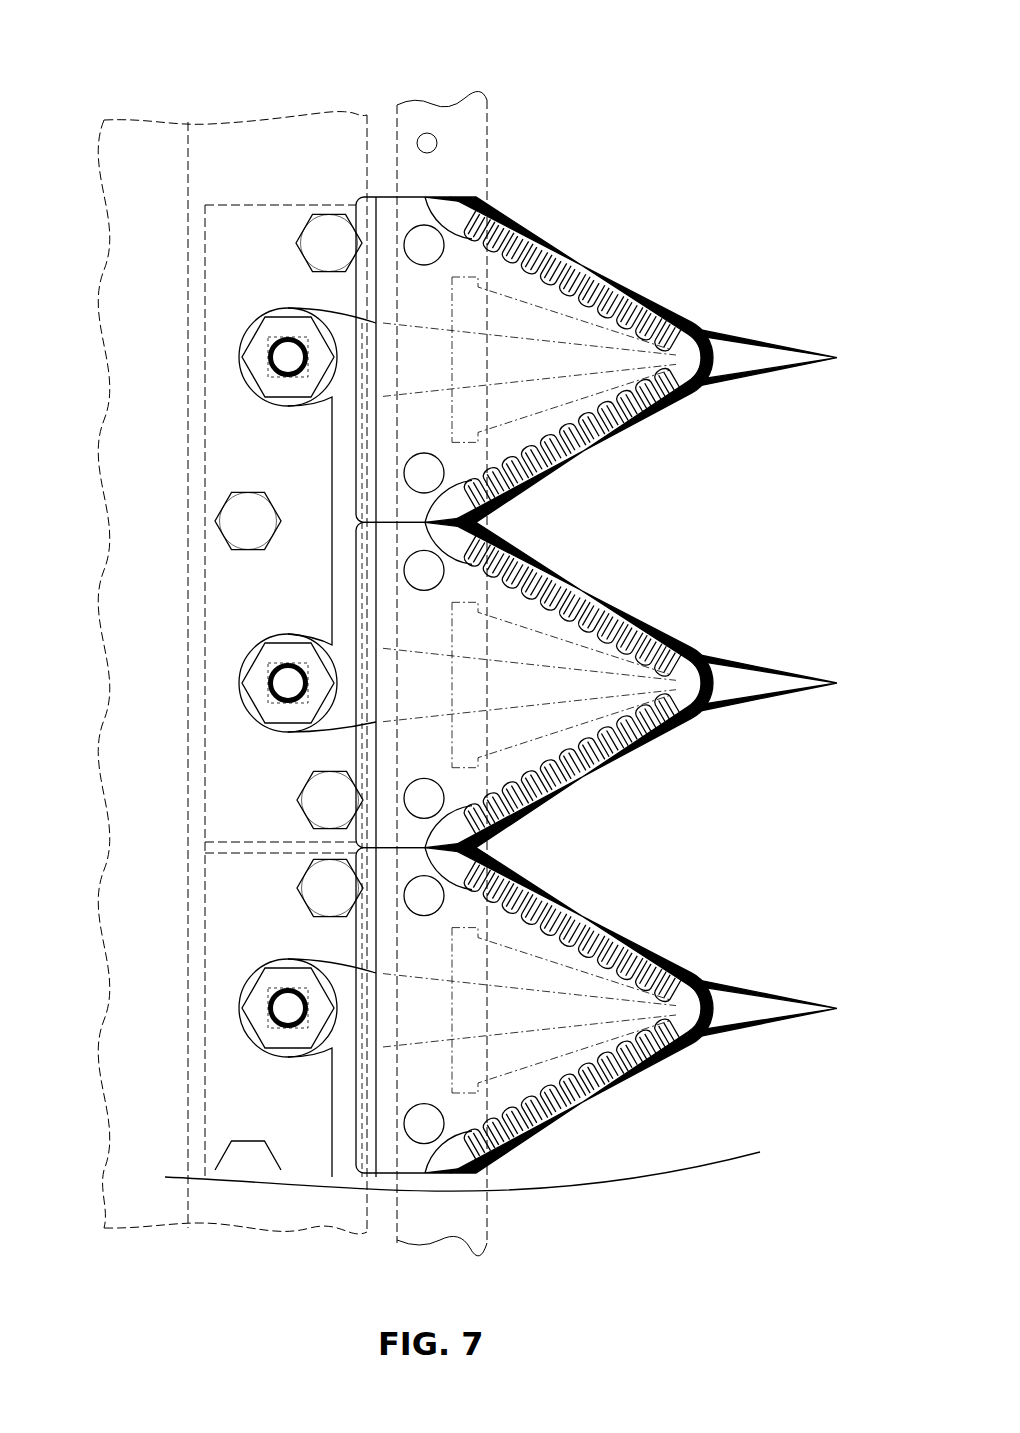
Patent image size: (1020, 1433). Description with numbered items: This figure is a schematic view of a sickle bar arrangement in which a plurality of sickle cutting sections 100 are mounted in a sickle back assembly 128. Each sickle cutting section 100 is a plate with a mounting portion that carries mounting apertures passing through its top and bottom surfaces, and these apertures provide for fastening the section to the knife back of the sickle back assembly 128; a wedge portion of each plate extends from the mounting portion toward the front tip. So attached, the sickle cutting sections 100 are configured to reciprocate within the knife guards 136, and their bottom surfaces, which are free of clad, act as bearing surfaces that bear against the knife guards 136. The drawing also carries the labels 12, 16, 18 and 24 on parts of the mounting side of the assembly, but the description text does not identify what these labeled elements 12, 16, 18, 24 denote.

The sickle back assembly 128 is at (748, 88).
The mounting plate 12 is at (330, 452).
The guard bar 16 is at (338, 586).
The bolt fastener 18 is at (256, 343).
The sickle cutting section 100 is at (560, 635).
The serrated cutting edge 24 is at (625, 1082).
The knife guards 136 is at (797, 358).